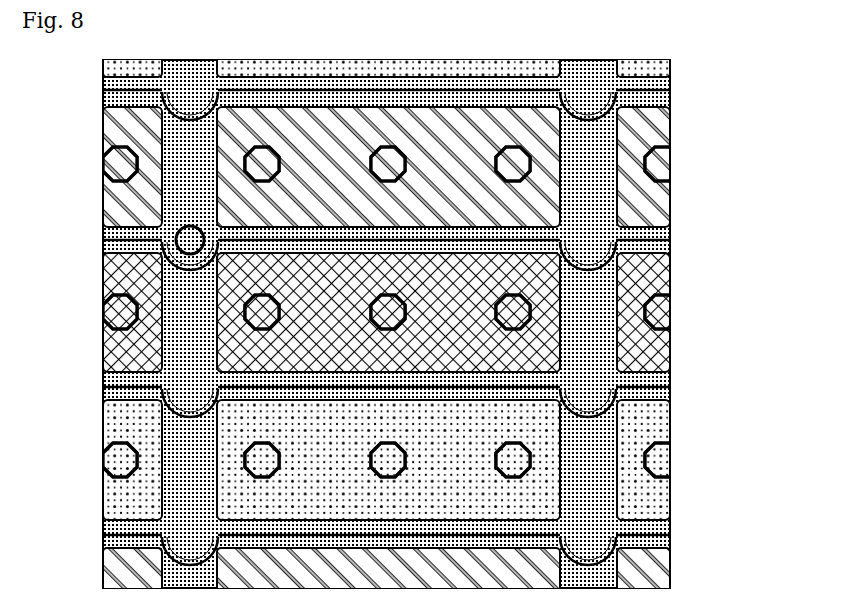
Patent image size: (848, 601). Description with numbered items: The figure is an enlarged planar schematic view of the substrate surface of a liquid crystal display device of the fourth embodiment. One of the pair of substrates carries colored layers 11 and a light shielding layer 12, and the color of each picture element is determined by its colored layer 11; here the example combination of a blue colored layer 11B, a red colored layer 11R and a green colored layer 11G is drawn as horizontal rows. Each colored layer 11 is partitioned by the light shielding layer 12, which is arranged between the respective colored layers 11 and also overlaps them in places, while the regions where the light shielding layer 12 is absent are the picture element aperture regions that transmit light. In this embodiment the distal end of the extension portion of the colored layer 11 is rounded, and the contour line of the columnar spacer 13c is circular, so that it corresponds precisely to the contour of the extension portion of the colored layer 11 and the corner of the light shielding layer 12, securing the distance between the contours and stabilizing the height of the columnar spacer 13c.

The colored layer 11 is at (775, 187).
The blue colored layer 11B is at (648, 200).
The red colored layer 11R is at (648, 348).
The green colored layer 11G is at (650, 495).
The light shielding layer 12 is at (672, 556).
The columnar spacer 13c is at (178, 247).